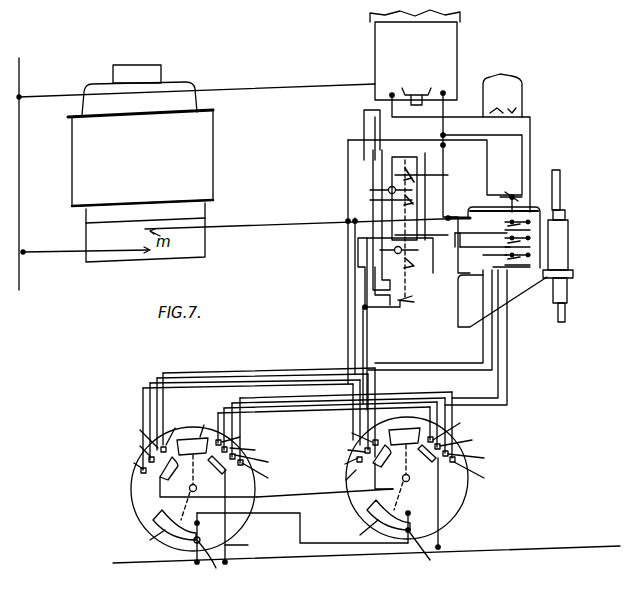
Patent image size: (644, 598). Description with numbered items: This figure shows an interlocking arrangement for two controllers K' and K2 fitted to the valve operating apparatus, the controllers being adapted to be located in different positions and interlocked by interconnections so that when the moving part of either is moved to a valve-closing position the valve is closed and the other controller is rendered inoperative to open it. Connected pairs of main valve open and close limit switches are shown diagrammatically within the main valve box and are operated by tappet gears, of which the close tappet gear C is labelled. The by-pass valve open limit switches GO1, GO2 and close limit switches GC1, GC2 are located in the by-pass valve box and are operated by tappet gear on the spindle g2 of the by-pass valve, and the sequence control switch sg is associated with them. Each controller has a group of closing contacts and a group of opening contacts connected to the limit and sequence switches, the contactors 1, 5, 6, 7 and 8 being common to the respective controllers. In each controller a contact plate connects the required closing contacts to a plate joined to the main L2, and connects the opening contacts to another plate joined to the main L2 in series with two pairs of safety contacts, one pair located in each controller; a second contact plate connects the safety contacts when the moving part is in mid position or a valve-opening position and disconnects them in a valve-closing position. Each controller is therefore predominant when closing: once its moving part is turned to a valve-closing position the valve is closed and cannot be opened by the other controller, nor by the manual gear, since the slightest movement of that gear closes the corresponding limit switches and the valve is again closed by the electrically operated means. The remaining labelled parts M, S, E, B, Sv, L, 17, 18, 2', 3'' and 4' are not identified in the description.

The motor M is at (140, 163).
The source / battery S is at (415, 57).
The exciter E is at (502, 95).
The relay B is at (380, 149).
The tappet gear C is at (395, 263).
The switch Sv is at (390, 296).
The sequence control switch sg is at (511, 192).
The spindle of the by-pass valve g2 is at (560, 181).
The by-pass valve open limit switch GO1 is at (516, 212).
The by-pass valve open limit switch GO2 is at (568, 232).
The by-pass valve close limit switch GC1 is at (540, 261).
The by-pass valve close limit switch GC2 is at (517, 263).
The supply line L is at (19, 178).
The main L2 is at (366, 549).
The conductor 17 is at (197, 95).
The conductor 18 is at (258, 241).
The contactor 7 is at (355, 337).
The contactor 8 is at (348, 357).
The contactor 5 is at (365, 345).
The contactor 6 is at (369, 357).
The contactor 1 is at (507, 343).
The conductor 2' is at (302, 530).
The conductor 3'' is at (325, 498).
The conductor 4' is at (342, 520).
The controller K' is at (199, 495).
The controller K2 is at (460, 503).